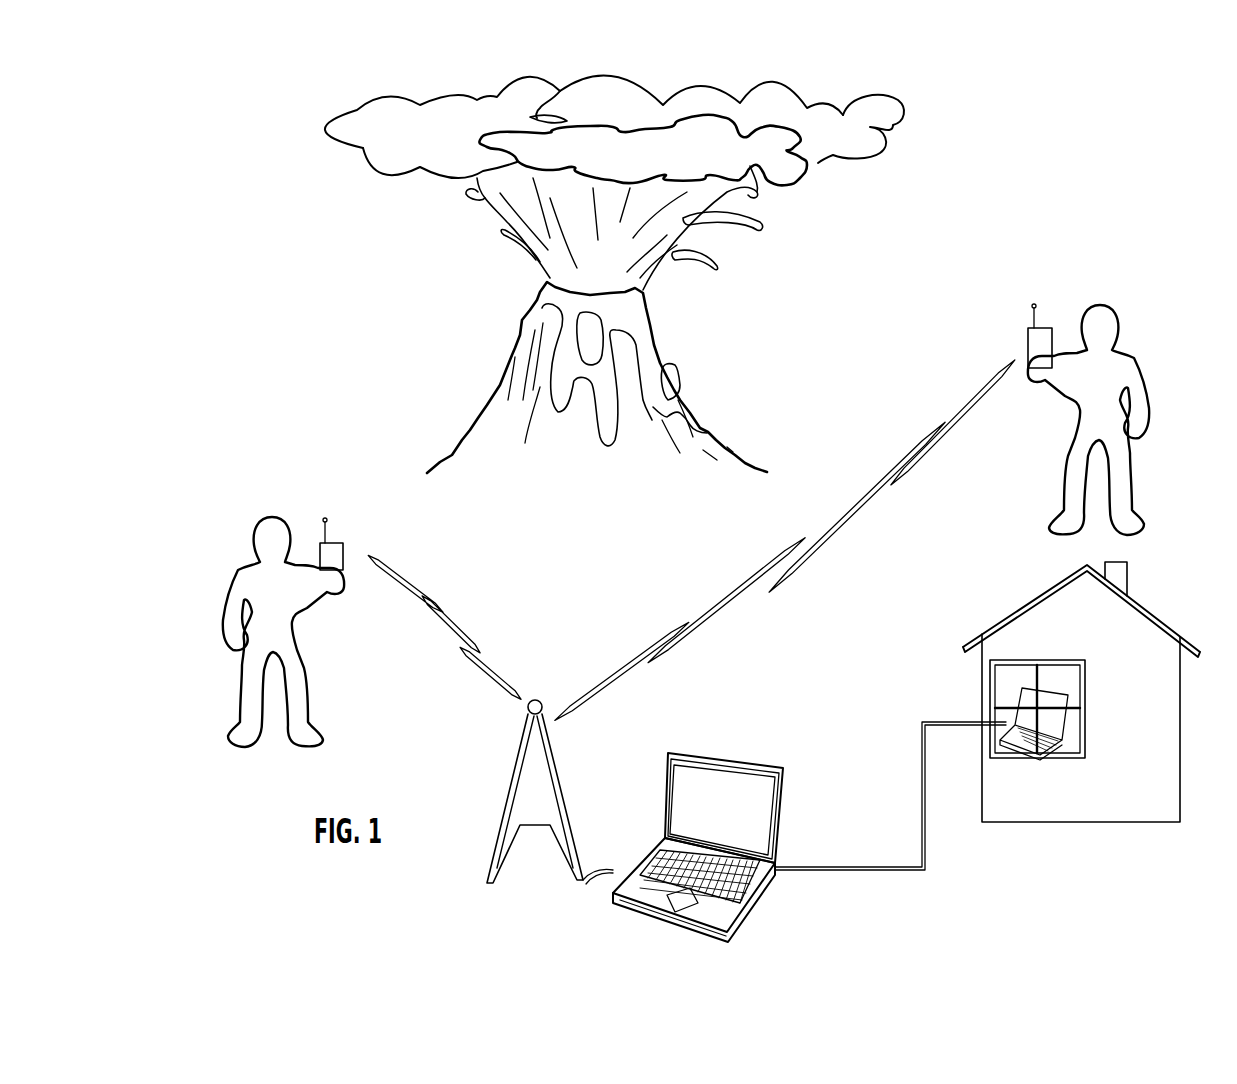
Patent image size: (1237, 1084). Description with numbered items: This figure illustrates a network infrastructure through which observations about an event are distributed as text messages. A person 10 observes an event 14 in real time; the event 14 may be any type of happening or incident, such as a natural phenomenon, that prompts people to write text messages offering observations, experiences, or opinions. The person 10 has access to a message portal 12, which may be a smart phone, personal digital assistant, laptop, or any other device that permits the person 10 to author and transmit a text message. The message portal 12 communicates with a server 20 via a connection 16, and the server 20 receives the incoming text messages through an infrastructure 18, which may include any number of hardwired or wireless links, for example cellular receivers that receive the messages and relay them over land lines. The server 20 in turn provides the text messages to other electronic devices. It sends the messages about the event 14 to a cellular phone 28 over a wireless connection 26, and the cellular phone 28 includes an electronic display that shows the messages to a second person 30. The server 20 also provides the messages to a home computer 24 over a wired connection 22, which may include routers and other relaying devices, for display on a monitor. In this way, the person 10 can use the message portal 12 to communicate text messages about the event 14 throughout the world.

The person 10 is at (238, 540).
The message portal 12 is at (342, 572).
The event 14 is at (523, 265).
The connection 16 is at (455, 603).
The infrastructure 18 is at (512, 786).
The server 20 is at (737, 758).
The wired connection 22 is at (882, 866).
The home computer 24 is at (1020, 692).
The wireless connection 26 is at (778, 550).
The cellular phone 28 is at (1028, 338).
The person 30 is at (1085, 312).